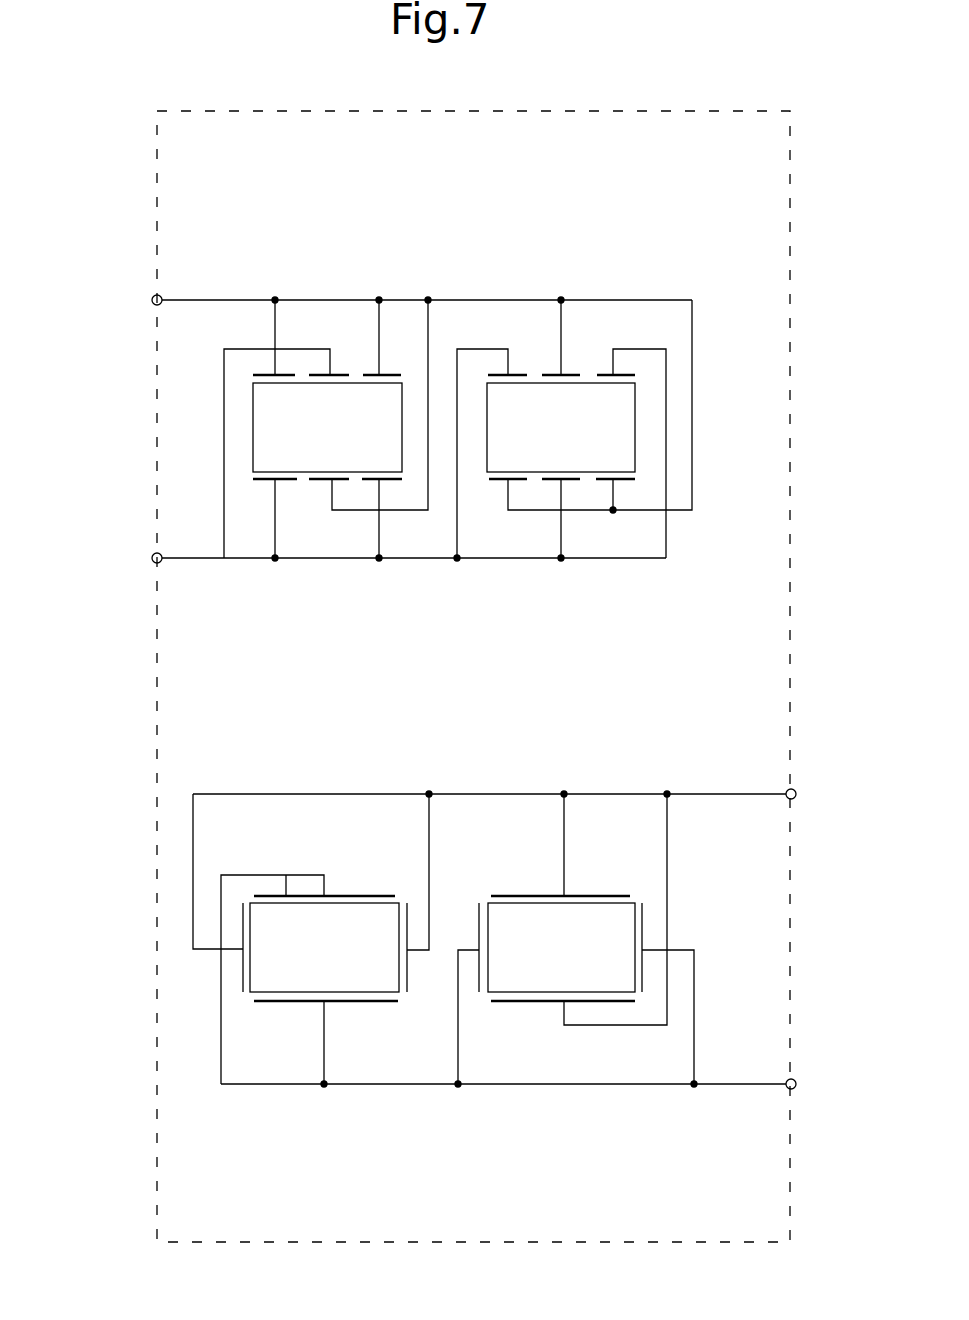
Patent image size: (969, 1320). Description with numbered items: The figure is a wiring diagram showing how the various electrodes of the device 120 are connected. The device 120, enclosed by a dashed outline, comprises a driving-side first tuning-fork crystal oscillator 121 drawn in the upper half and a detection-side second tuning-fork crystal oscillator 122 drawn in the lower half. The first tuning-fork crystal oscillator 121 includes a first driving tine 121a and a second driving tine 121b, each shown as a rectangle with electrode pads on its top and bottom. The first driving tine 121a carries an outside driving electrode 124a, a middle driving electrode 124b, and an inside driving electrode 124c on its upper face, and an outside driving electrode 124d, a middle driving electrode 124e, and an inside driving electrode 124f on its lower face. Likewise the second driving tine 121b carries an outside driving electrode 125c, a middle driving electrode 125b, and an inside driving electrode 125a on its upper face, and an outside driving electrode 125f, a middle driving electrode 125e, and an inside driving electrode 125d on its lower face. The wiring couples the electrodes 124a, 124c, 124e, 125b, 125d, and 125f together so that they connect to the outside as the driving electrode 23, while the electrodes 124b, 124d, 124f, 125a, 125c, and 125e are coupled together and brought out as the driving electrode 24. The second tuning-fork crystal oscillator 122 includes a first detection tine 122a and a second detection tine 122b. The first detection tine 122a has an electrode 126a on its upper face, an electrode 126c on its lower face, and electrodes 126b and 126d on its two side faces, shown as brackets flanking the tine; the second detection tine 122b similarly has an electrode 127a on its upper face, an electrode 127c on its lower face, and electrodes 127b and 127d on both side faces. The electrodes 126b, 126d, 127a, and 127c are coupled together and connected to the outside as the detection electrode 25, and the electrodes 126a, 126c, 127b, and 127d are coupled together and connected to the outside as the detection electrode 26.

The driving electrode 23 is at (137, 302).
The driving electrode 24 is at (133, 560).
The detection electrode 25 is at (814, 795).
The detection electrode 26 is at (814, 1083).
The device 120 is at (145, 818).
The first tuning-fork crystal oscillator 121 is at (733, 416).
The first driving tine 121a is at (390, 412).
The second driving tine 121b is at (618, 417).
The second tuning-fork crystal oscillator 122 is at (727, 931).
The first detection tine 122a is at (358, 918).
The second detection tine 122b is at (600, 917).
The outside driving electrode 124a is at (265, 375).
The middle driving electrode 124b is at (340, 375).
The inside driving electrode 124c is at (387, 375).
The outside driving electrode 124d is at (285, 483).
The middle driving electrode 124e is at (340, 483).
The inside driving electrode 124f is at (392, 483).
The inside driving electrode 125a is at (518, 375).
The middle driving electrode 125b is at (572, 375).
The outside driving electrode 125c is at (625, 375).
The inside driving electrode 125d is at (517, 483).
The middle driving electrode 125e is at (572, 483).
The outside driving electrode 125f is at (625, 483).
The electrode 126a is at (287, 875).
The electrode 126b is at (242, 968).
The electrode 126c is at (352, 1003).
The electrode 126d is at (405, 970).
The electrode 127a is at (518, 895).
The electrode 127b is at (476, 970).
The electrode 127c is at (550, 1003).
The electrode 127d is at (644, 973).